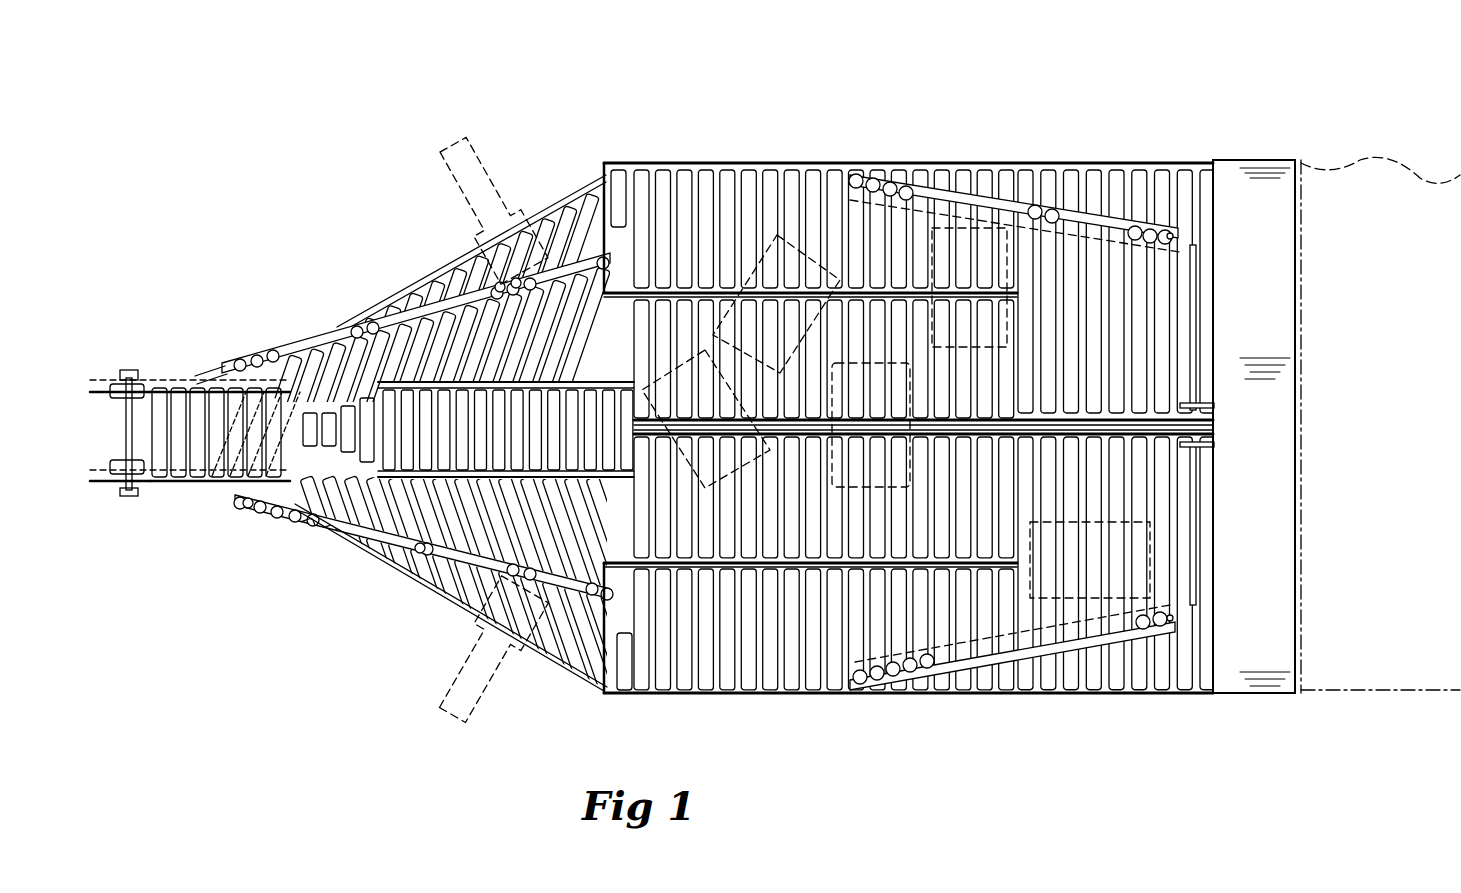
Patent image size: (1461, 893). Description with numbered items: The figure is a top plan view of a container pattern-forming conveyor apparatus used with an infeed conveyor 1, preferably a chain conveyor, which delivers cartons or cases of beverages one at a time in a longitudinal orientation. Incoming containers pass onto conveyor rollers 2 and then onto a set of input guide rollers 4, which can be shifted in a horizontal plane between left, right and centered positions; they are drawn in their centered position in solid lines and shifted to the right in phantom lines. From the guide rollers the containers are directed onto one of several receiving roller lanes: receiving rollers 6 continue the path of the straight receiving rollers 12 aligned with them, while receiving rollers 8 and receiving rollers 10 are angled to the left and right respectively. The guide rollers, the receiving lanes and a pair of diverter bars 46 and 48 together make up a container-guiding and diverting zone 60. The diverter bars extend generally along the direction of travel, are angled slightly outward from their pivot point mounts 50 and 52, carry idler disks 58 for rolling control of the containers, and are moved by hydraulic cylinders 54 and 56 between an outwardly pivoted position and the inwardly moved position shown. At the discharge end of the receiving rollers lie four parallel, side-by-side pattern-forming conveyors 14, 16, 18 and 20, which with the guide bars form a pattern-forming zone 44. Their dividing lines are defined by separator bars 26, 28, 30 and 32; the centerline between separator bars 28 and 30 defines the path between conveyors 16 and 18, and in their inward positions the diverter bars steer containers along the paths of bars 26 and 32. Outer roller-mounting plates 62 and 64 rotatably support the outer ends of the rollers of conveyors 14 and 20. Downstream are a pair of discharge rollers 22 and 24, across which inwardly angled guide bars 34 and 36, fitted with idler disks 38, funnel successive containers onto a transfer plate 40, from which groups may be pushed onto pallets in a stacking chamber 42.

The infeed conveyor 1 is at (122, 392).
The conveyor rollers 2 is at (195, 484).
The guide rollers 4 is at (228, 392).
The receiving rollers 6 is at (330, 405).
The receiving rollers 8 is at (438, 272).
The receiving rollers 10 is at (414, 596).
The straight receiving rollers 12 is at (445, 444).
The pattern-forming conveyor 14 is at (750, 241).
The pattern-forming conveyor 16 is at (880, 346).
The pattern-forming conveyor 18 is at (882, 544).
The pattern-forming conveyor 20 is at (753, 644).
The discharge roller 22 is at (1143, 378).
The discharge roller 24 is at (1143, 496).
The separator bar 26 is at (1010, 295).
The separator bar 28 is at (1188, 408).
The separator bar 30 is at (1188, 447).
The separator bar 32 is at (1000, 566).
The guide bar 34 is at (1000, 190).
The guide bar 36 is at (1053, 650).
The idler disks 38 is at (1172, 240).
The transfer plate 40 is at (1243, 185).
The stacking chamber 42 is at (1365, 162).
The pattern-forming zone 44 is at (928, 411).
The diverter bar 46 is at (300, 340).
The diverter bar 48 is at (300, 522).
The pivot point mount 50 is at (218, 368).
The pivot point mount 52 is at (228, 506).
The hydraulic cylinder 54 is at (455, 706).
The hydraulic cylinder 56 is at (448, 150).
The idler disks 58 is at (515, 277).
The container-guiding and diverting zone 60 is at (401, 328).
The outer roller-mounting plate 62 is at (648, 163).
The outer roller-mounting plate 64 is at (657, 700).